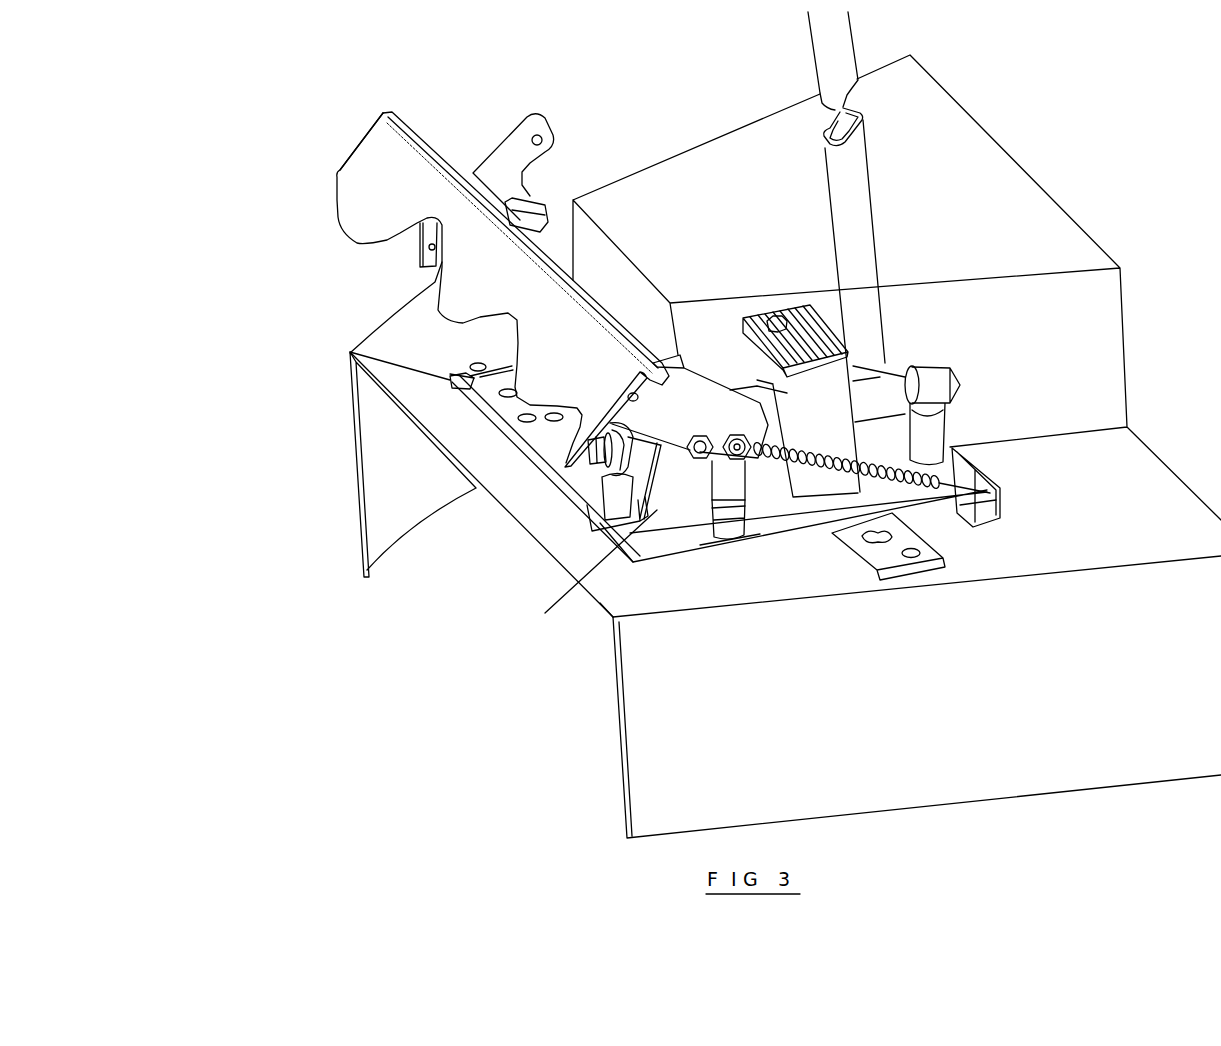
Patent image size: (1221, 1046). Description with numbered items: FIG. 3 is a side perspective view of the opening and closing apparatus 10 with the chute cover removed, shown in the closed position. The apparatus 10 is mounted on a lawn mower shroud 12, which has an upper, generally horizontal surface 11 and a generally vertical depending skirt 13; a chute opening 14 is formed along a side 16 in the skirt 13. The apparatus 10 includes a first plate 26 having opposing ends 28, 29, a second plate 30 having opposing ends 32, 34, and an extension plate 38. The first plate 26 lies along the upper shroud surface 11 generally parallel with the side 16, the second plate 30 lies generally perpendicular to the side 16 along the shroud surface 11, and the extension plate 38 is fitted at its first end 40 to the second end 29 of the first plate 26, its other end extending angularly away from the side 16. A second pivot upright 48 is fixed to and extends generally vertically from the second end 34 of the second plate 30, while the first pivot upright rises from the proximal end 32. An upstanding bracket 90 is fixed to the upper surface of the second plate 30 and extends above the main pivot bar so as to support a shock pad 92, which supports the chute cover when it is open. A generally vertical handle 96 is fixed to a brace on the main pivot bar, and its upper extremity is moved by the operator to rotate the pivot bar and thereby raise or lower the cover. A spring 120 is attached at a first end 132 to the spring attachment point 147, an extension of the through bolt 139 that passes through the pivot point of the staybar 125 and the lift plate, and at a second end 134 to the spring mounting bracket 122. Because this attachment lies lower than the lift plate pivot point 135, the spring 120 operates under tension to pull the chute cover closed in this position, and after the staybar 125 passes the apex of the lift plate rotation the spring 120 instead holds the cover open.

The opening and closing apparatus 10 is at (292, 203).
The upper surface 11 is at (1143, 528).
The shroud 12 is at (563, 235).
The skirt 13 is at (998, 739).
The chute opening 14 is at (535, 611).
The side 16 is at (600, 588).
The first plate 26 is at (513, 443).
The first end of first plate 28 is at (590, 513).
The second end of first plate 29 is at (455, 386).
The second plate 30 is at (773, 537).
The proximal end of second plate 32 is at (610, 615).
The second end of second plate 34 is at (933, 510).
The extension plate 38 is at (487, 337).
The first end of extension plate 40 is at (453, 390).
The second pivot upright 48 is at (923, 367).
The upstanding bracket 90 is at (829, 431).
The shock pad 92 is at (797, 318).
The handle 96 is at (855, 227).
The spring 120 is at (873, 463).
The spring mounting bracket 122 is at (1000, 517).
The staybar 125 is at (545, 613).
The first end of spring 132 is at (690, 470).
The second end of spring 134 is at (993, 488).
The lift plate pivot point 135 is at (733, 462).
The through bolt 139 is at (700, 462).
The spring attachment point 147 is at (703, 440).